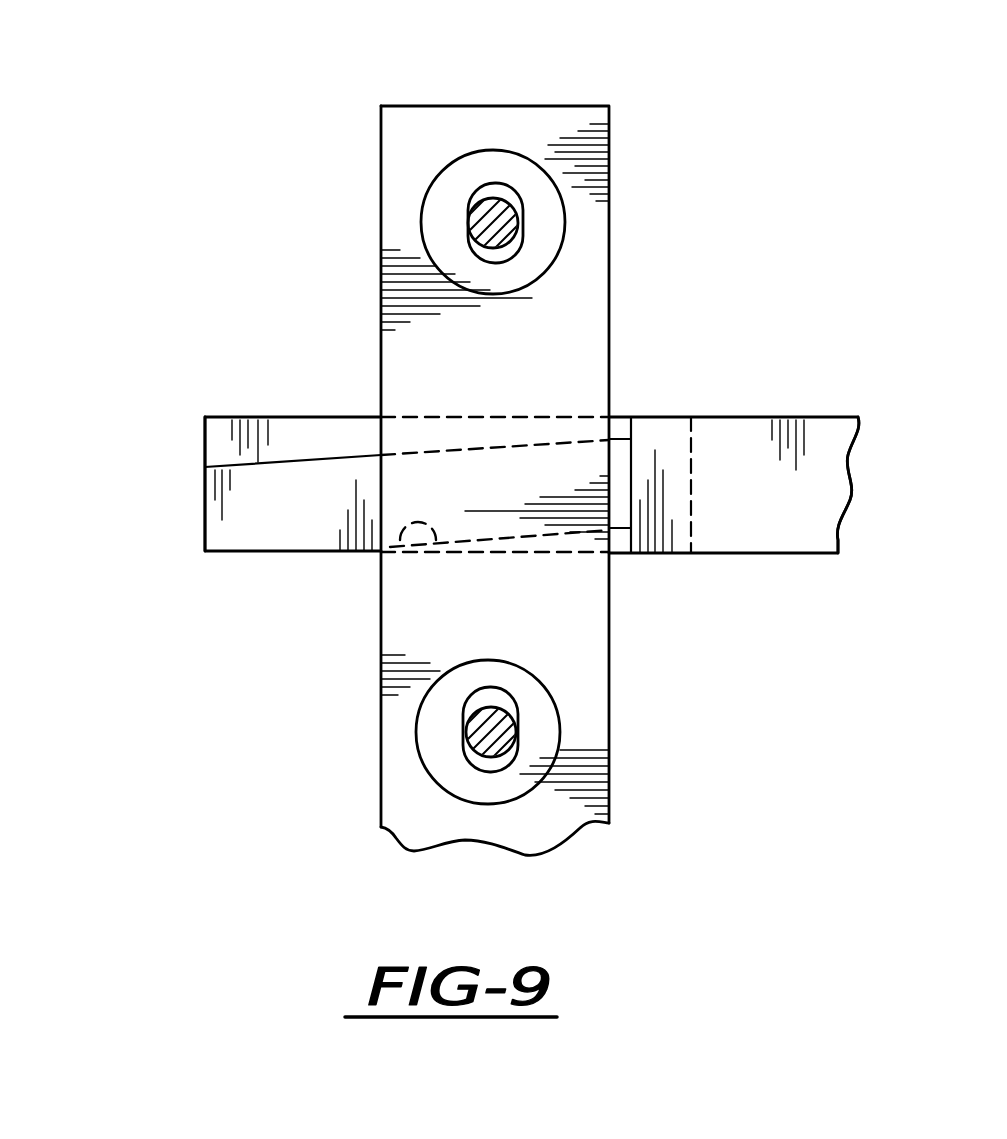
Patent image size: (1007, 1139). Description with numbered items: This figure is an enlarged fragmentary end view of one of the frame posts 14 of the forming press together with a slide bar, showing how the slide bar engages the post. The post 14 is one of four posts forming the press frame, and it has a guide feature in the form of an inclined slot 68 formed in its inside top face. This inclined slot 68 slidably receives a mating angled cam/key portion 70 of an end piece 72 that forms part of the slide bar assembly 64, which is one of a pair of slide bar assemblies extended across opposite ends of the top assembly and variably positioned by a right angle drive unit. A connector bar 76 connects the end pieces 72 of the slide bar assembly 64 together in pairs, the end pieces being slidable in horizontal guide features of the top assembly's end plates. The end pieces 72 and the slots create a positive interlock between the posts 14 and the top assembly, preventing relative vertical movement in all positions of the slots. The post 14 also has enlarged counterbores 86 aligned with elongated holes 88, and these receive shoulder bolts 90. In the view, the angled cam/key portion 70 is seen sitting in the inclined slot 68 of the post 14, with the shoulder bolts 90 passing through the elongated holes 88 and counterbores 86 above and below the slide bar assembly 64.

The post 14 is at (640, 259).
The slide bar assembly 64 is at (781, 586).
The inclined slot 68 is at (393, 543).
The angled cam/key portion 70 is at (300, 482).
The end piece 72 is at (178, 432).
The connector bar 76 is at (818, 436).
The counterbore 86 is at (459, 154).
The elongated hole 88 is at (521, 212).
The shoulder bolt 90 is at (446, 201).